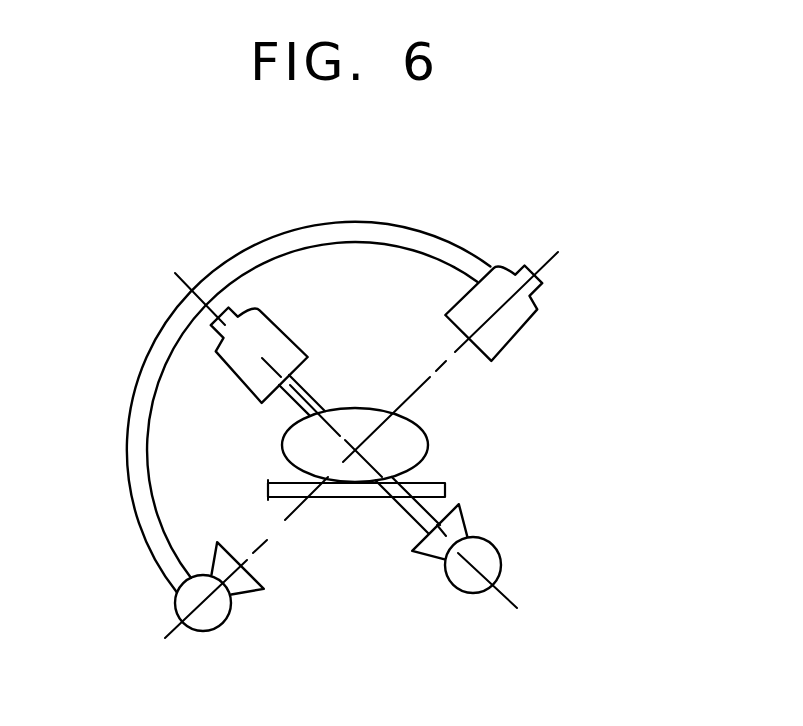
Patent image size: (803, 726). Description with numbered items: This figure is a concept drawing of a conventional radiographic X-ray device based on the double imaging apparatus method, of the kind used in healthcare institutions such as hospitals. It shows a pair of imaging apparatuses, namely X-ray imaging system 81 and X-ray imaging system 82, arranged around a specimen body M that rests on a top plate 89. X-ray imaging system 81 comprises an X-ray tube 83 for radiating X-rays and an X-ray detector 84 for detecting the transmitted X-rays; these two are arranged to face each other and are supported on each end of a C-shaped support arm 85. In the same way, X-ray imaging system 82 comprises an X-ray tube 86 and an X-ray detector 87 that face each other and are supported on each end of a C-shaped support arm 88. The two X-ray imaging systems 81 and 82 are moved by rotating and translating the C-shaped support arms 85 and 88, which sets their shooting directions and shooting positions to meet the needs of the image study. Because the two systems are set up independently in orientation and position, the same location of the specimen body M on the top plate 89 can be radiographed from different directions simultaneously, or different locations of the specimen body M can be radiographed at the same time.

The X-ray imaging system 81 is at (501, 545).
The X-ray imaging system 82 is at (177, 608).
The X-ray tube 83 is at (472, 582).
The X-ray detector 84 is at (235, 370).
The C-shaped support arm 85 is at (317, 395).
The X-ray tube 86 is at (220, 617).
The X-ray detector 87 is at (522, 285).
The C-shaped support arm 88 is at (312, 237).
The top plate 89 is at (361, 494).
The specimen body M is at (433, 433).